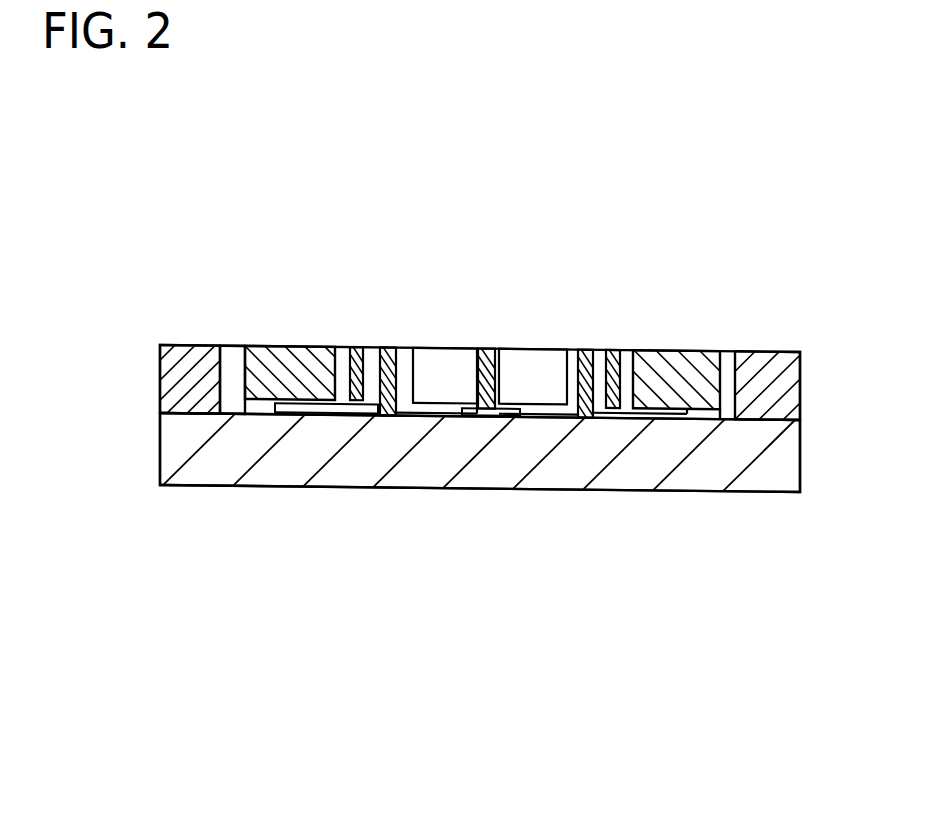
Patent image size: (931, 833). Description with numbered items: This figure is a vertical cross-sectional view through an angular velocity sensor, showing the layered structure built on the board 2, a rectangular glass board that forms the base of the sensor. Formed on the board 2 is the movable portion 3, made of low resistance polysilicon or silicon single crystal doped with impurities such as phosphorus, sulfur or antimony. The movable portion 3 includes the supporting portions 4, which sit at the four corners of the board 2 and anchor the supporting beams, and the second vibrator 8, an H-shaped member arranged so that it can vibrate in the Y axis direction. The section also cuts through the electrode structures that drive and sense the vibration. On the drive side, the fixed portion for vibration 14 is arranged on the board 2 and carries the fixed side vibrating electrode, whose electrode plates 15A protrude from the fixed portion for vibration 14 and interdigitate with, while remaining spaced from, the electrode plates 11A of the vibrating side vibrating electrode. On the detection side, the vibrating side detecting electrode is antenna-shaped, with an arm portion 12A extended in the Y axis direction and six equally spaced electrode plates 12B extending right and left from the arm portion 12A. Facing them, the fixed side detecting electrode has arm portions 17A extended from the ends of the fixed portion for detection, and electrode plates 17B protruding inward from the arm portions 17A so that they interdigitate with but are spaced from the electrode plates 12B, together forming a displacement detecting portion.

The board 2 is at (747, 475).
The supporting portion 4 is at (173, 397).
The electrode plate 15A is at (232, 356).
The movable portion 3 is at (297, 331).
The second vibrator 8 is at (358, 348).
The electrode plate 17B is at (407, 355).
The arm portion 12A is at (487, 353).
The electrode plate 12B is at (536, 357).
The arm portion 17A is at (588, 357).
The electrode plate 11A is at (678, 356).
The fixed portion for vibration 14 is at (778, 363).